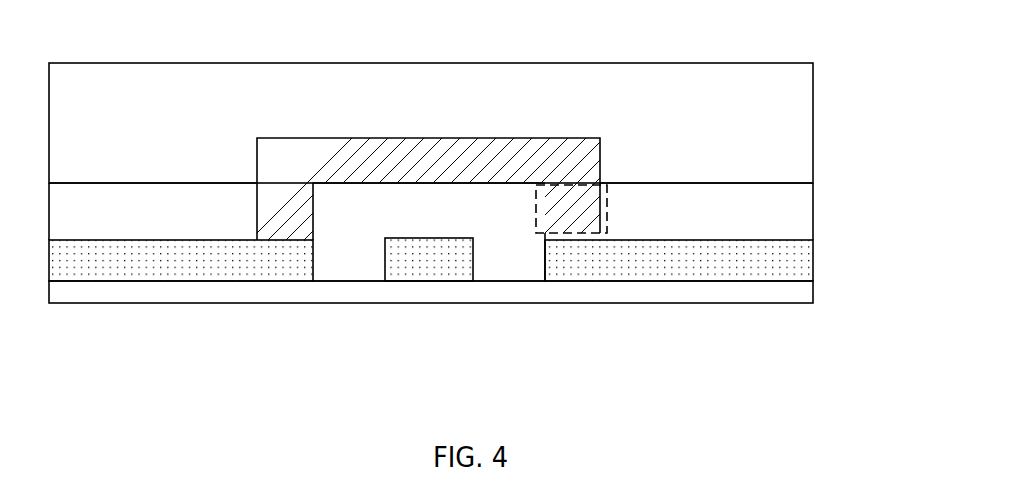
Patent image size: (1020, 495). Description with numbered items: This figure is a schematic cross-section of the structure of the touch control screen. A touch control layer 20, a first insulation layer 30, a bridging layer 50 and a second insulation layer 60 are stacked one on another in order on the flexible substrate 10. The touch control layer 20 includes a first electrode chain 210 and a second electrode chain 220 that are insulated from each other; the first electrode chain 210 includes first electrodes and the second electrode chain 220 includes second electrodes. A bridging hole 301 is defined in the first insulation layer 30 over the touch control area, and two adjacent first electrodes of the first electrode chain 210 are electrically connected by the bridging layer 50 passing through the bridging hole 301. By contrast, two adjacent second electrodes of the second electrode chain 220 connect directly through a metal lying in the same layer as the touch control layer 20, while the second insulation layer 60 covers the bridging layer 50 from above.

The flexible substrate 10 is at (797, 293).
The touch control layer 20 is at (431, 326).
The first electrode chain 210 is at (280, 270).
The second electrode chain 220 is at (429, 301).
The first insulation layer 30 is at (797, 202).
The bridging hole 301 is at (532, 200).
The bridging layer 50 is at (445, 147).
The second insulation layer 60 is at (797, 110).